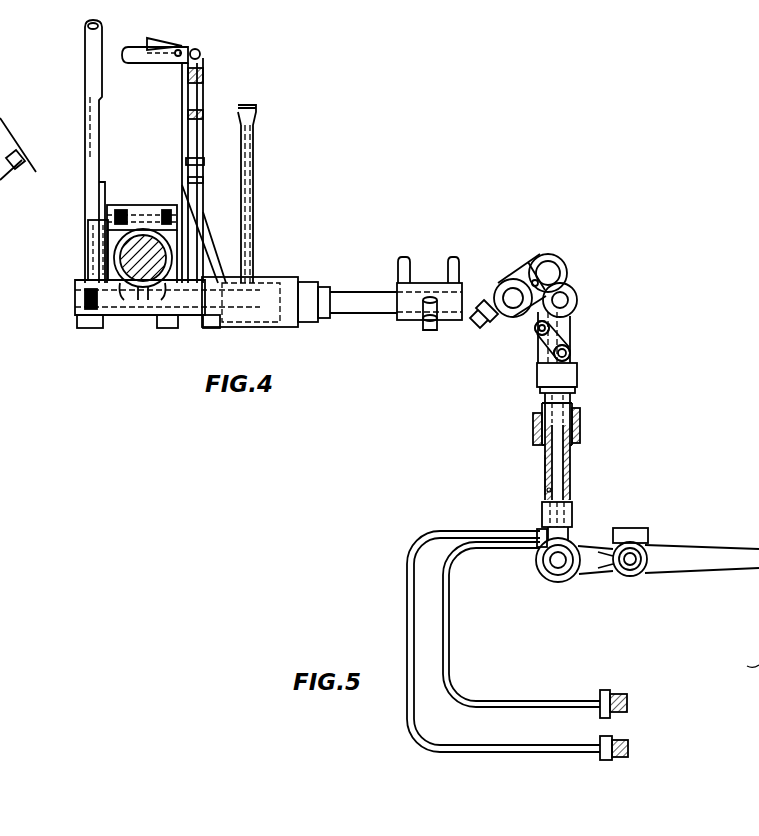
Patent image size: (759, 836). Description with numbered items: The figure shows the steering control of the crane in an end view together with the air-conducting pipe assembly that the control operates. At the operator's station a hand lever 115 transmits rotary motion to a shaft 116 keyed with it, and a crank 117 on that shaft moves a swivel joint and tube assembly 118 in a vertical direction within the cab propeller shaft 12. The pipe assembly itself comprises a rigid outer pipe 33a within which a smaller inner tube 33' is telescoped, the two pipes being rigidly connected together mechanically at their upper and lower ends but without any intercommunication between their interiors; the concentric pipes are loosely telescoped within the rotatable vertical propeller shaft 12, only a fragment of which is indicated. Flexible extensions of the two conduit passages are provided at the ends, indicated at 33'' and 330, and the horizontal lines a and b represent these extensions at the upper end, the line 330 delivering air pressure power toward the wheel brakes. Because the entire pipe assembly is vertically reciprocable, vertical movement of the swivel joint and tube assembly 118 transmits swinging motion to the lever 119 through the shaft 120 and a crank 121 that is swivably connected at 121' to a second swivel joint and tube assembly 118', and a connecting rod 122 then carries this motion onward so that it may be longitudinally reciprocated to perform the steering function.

In FIG. 4, the hand lever 115 is at (90, 53).
In FIG. 4, the shaft 116 is at (355, 303).
In FIG. 5, the shaft 116 is at (512, 289).
In FIG. 4, the crank 117 is at (446, 312).
In FIG. 5, the crank 117 is at (528, 266).
In FIG. 5, the swivel joint and tube assembly 118 is at (585, 341).
In FIG. 5, the horizontal line a is at (533, 332).
In FIG. 5, the horizontal line b is at (571, 352).
In FIG. 5, the rigid outer pipe 33a is at (575, 398).
In FIG. 5, the rotatable vertical propeller shaft 12 is at (583, 430).
In FIG. 5, the inner tube 33' is at (514, 475).
In FIG. 5, the second swivel joint and tube assembly 118' is at (579, 505).
In FIG. 5, the crank 121 is at (611, 532).
In FIG. 5, the swivel connection 121' is at (558, 570).
In FIG. 5, the shaft 120 is at (642, 545).
In FIG. 5, the lever 119 is at (700, 548).
In FIG. 5, the flexible extension 33'' is at (500, 645).
In FIG. 5, the line 330 is at (450, 592).
In FIG. 5, the connecting rod 122 is at (738, 672).